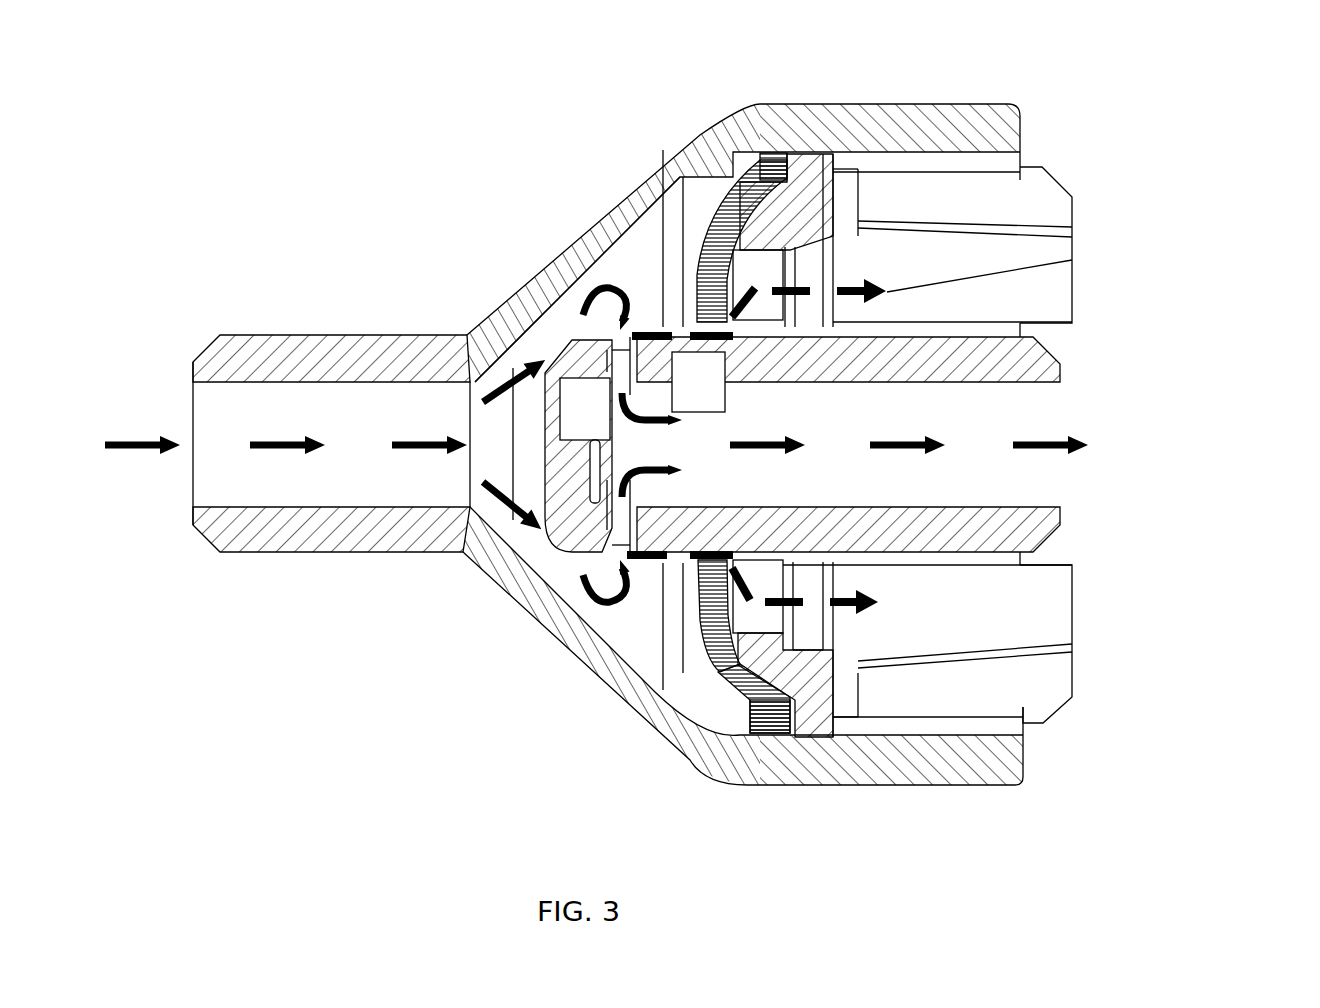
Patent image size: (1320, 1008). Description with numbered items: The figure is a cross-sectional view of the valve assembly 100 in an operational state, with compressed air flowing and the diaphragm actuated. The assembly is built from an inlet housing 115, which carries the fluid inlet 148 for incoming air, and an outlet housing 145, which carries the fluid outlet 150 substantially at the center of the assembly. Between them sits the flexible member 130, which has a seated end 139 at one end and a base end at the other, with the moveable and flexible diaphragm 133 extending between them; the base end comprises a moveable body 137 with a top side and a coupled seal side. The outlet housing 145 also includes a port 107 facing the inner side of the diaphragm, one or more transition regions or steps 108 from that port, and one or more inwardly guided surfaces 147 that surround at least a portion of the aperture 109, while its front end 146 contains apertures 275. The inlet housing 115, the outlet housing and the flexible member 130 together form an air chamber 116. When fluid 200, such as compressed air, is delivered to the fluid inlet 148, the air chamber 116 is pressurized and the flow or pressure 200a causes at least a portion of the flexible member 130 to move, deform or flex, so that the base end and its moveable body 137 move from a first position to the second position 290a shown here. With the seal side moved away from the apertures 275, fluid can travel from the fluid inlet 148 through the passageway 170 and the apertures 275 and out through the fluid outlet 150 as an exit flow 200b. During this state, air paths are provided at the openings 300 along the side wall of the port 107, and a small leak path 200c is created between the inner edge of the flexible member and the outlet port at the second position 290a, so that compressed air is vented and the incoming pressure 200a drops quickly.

The valve assembly 100 is at (1190, 184).
The port 107 is at (772, 247).
The transition regions or steps 108 is at (820, 245).
The aperture 109 is at (935, 232).
The inlet housing 115 is at (432, 350).
The air chamber 116 is at (650, 262).
The flexible member 130 is at (770, 255).
The diaphragm 133 is at (728, 672).
The moveable body 137 is at (680, 568).
The seated end 139 is at (787, 733).
The outlet housing 145 is at (1015, 225).
The front end 146 is at (603, 258).
The inwardly guided surfaces 147 is at (1037, 222).
The fluid inlet 148 is at (190, 464).
The fluid outlet 150 is at (1052, 396).
The passageway 170 is at (547, 556).
The fluid 200 is at (152, 432).
The flow or pressure 200a is at (303, 438).
The exit flow 200b is at (1073, 450).
The leak path 200c is at (892, 290).
The apertures 275 is at (623, 347).
The second position 290a is at (683, 320).
The openings 300 is at (1072, 260).